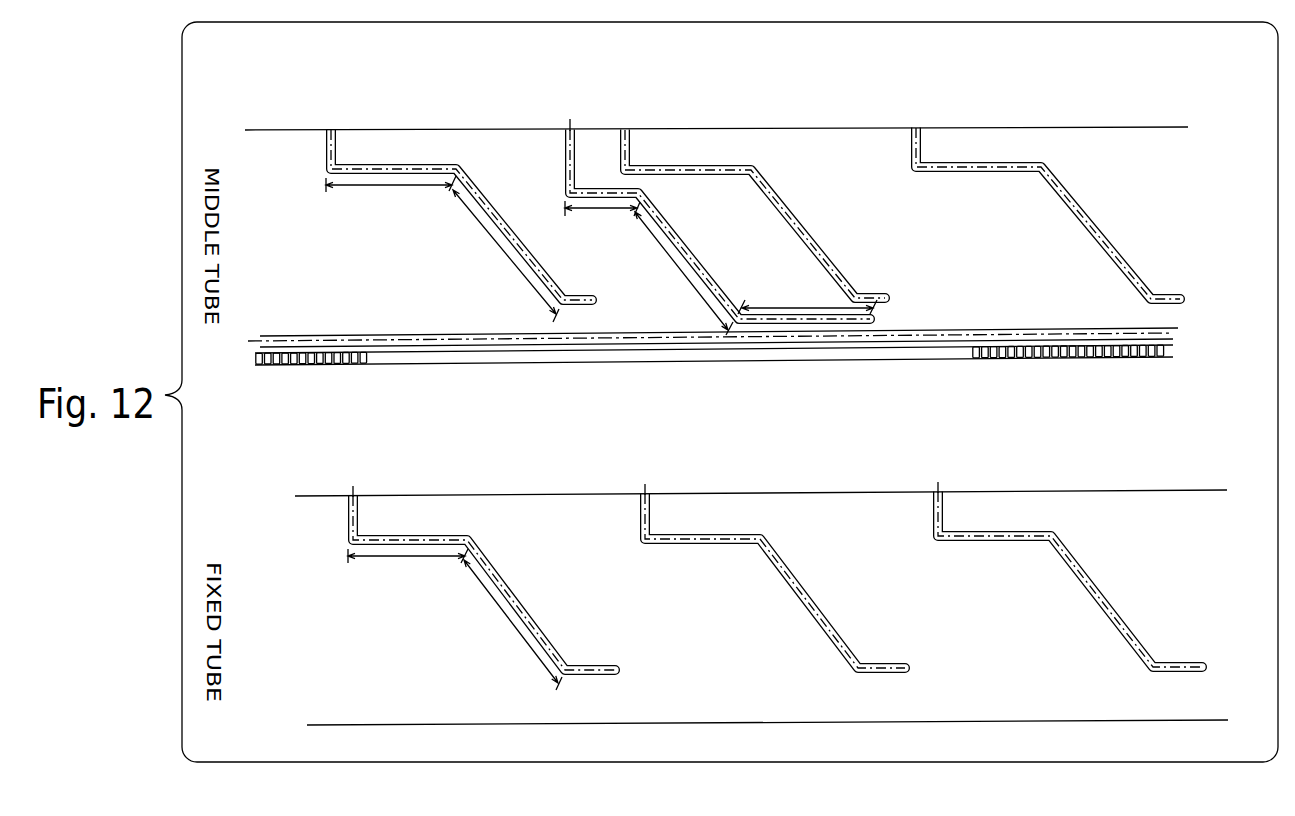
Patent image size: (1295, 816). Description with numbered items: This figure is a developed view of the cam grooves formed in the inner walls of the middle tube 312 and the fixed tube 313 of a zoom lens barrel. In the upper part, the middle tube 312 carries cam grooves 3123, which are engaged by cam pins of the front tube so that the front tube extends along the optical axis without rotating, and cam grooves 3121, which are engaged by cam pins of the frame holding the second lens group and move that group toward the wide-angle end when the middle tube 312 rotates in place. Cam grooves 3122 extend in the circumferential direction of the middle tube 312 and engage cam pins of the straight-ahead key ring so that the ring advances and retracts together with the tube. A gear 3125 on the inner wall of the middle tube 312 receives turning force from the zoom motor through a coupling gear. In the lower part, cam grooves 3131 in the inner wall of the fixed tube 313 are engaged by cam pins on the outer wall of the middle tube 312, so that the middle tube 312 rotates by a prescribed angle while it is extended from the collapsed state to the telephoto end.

The middle tube 312 is at (1125, 130).
The cam grooves 3121 is at (573, 140).
The cam grooves 3122 is at (1110, 333).
The cam grooves 3123 is at (498, 217).
The gear 3125 is at (372, 372).
The fixed tube 313 is at (1197, 490).
The cam grooves 3131 is at (507, 588).